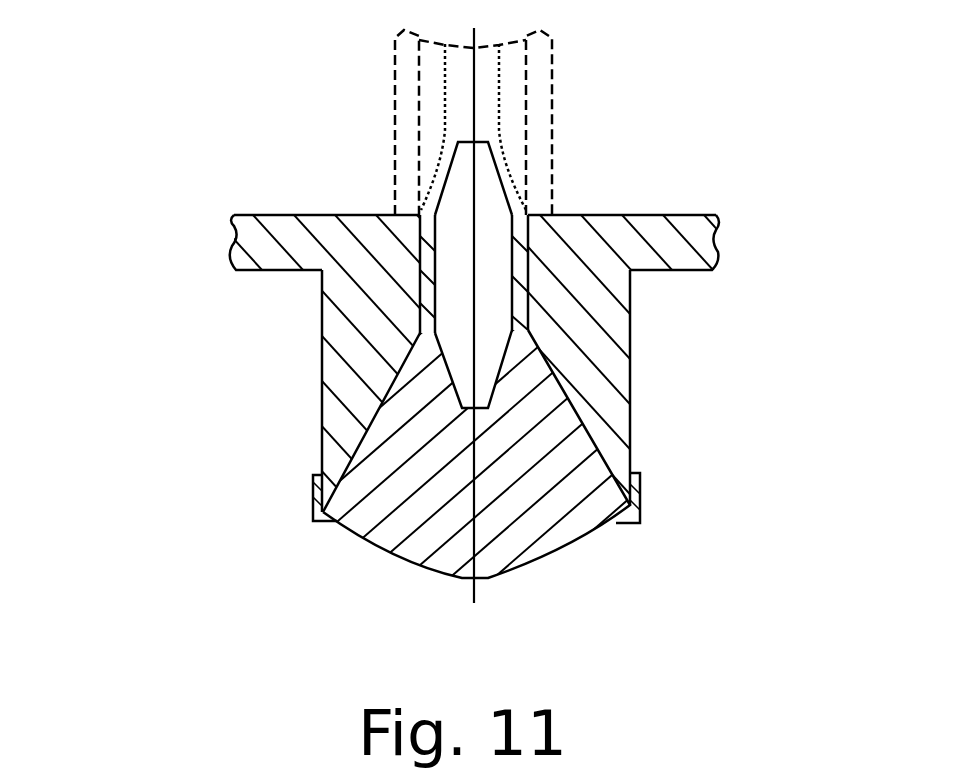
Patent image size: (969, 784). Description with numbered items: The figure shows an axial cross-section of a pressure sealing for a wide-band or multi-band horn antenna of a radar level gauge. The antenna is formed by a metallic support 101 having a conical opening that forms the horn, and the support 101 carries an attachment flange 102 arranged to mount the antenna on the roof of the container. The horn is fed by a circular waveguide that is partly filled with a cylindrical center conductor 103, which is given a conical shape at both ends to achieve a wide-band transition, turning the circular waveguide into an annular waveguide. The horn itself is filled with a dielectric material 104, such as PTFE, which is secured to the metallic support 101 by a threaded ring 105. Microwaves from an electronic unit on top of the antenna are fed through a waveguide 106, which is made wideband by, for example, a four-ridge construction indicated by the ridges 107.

The metallic support 101 is at (370, 302).
The attachment flange 102 is at (277, 230).
The cylindrical center conductor 103 is at (488, 317).
The dielectric material 104 is at (530, 429).
The threaded ring 105 is at (641, 507).
The waveguide 106 is at (552, 177).
The ridges 107 is at (508, 93).